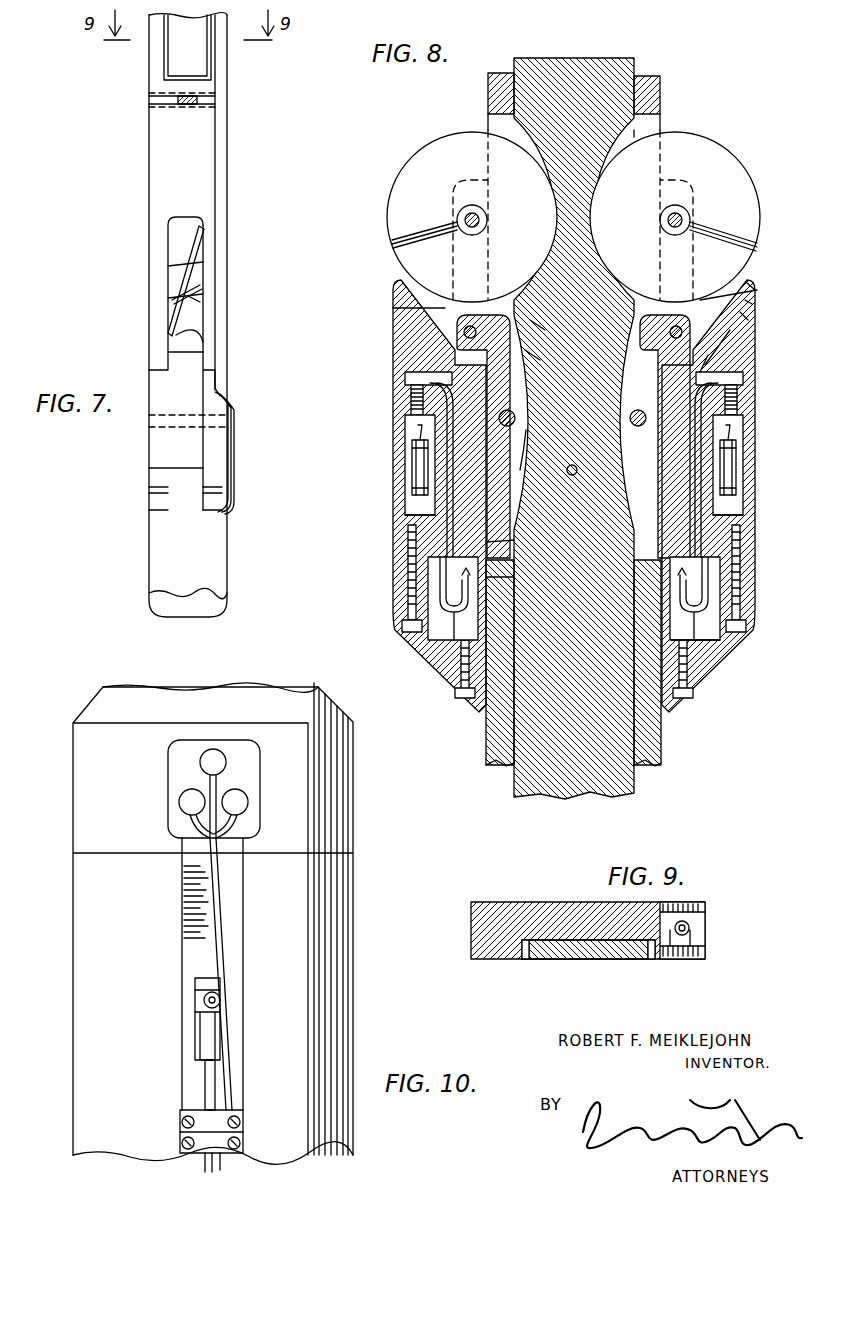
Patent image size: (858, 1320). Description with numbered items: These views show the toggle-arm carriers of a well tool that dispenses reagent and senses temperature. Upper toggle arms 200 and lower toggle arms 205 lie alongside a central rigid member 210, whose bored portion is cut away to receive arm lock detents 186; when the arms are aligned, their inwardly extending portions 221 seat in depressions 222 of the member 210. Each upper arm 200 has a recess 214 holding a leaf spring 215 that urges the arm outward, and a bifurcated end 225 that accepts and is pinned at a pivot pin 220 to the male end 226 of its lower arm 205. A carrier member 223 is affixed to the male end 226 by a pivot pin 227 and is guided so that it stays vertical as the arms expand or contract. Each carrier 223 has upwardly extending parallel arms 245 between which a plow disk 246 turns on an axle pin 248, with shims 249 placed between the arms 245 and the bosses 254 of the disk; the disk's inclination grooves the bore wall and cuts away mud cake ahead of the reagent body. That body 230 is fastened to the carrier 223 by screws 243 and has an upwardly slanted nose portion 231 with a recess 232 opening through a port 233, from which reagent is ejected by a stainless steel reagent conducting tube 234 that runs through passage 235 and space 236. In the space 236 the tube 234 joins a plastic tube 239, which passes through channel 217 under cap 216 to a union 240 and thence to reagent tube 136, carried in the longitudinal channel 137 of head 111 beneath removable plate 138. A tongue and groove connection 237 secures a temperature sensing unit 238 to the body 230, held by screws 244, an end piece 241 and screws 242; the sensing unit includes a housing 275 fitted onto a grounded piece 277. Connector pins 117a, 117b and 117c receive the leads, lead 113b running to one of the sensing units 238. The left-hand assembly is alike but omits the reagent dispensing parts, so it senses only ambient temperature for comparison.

In FIG. 7, the upper toggle arm 200 is at (203, 148).
In FIG. 8, the upper toggle arm 200 is at (491, 96).
In FIG. 9, the upper toggle arm 200 is at (513, 910).
In FIG. 7, the cap 216 is at (220, 188).
In FIG. 9, the cap 216 is at (700, 934).
In FIG. 7, the arm lock detent 186 is at (180, 104).
In FIG. 7, the plow disk 246 is at (199, 250).
In FIG. 8, the plow disk 246 is at (425, 150).
In FIG. 8, the axle pin 248 is at (468, 215).
In FIG. 7, the boss 254 is at (183, 290).
In FIG. 8, the boss 254 is at (466, 230).
In FIG. 7, the shim 249 is at (170, 269).
In FIG. 7, the body 230 is at (178, 343).
In FIG. 8, the body 230 is at (415, 348).
In FIG. 7, the male end 226 is at (199, 360).
In FIG. 8, the male end 226 is at (655, 400).
In FIG. 7, the bifurcated end 225 is at (168, 468).
In FIG. 8, the bifurcated end 225 is at (650, 525).
In FIG. 7, the plastic tube 239 is at (232, 488).
In FIG. 9, the plastic tube 239 is at (705, 913).
In FIG. 7, the lower toggle arm 205 is at (163, 568).
In FIG. 8, the lower toggle arm 205 is at (487, 745).
In FIG. 8, the rigid member 210 is at (625, 785).
In FIG. 8, the parallel arms 245 is at (447, 303).
In FIG. 8, the pivot pin 227 is at (676, 326).
In FIG. 8, the pivot pin 220 is at (540, 425).
In FIG. 8, the inwardly extending portion 221 is at (522, 470).
In FIG. 8, the depression 222 is at (575, 474).
In FIG. 8, the carrier member 223 is at (660, 562).
In FIG. 8, the nose portion 231 is at (757, 284).
In FIG. 8, the recess 232 is at (748, 298).
In FIG. 8, the port 233 is at (750, 319).
In FIG. 8, the reagent conducting tube 234 is at (730, 331).
In FIG. 8, the union 240 is at (745, 379).
In FIG. 8, the tongue and groove connection 237 is at (745, 397).
In FIG. 9, the tongue and groove connection 237 is at (700, 950).
In FIG. 8, the passage 235 is at (725, 436).
In FIG. 8, the temperature sensing unit 238 is at (405, 447).
In FIG. 8, the housing 275 is at (405, 490).
In FIG. 8, the piece 277 is at (407, 532).
In FIG. 8, the end piece 241 is at (428, 572).
In FIG. 8, the screw 242 is at (410, 598).
In FIG. 8, the lead 113b is at (710, 600).
In FIG. 8, the space 236 is at (700, 635).
In FIG. 8, the screw 243 is at (535, 325).
In FIG. 8, the screw 244 is at (530, 355).
In FIG. 9, the recess 214 is at (525, 946).
In FIG. 9, the leaf spring 215 is at (596, 955).
In FIG. 9, the channel 217 is at (673, 960).
In FIG. 10, the head 111 is at (353, 830).
In FIG. 10, the connector pin 117a is at (200, 763).
In FIG. 10, the connector pin 117b is at (243, 803).
In FIG. 10, the connector pin 117c is at (185, 803).
In FIG. 10, the reagent tube 136 is at (213, 1097).
In FIG. 10, the longitudinal channel 137 is at (197, 1075).
In FIG. 10, the removable plate 138 is at (205, 1150).